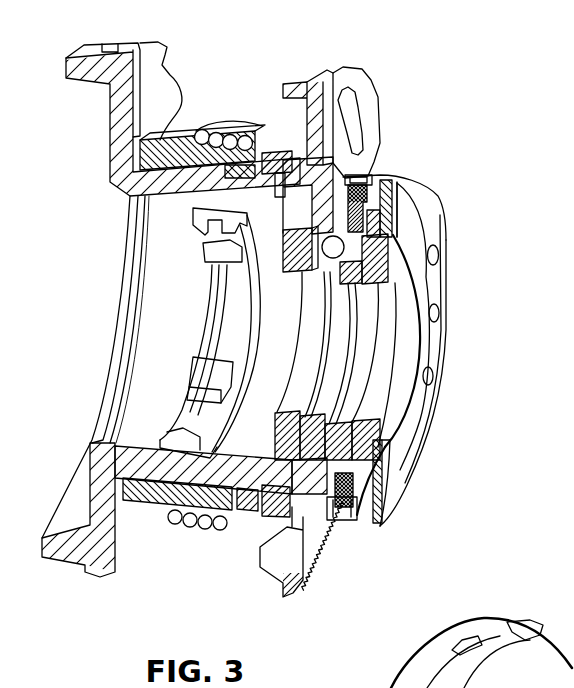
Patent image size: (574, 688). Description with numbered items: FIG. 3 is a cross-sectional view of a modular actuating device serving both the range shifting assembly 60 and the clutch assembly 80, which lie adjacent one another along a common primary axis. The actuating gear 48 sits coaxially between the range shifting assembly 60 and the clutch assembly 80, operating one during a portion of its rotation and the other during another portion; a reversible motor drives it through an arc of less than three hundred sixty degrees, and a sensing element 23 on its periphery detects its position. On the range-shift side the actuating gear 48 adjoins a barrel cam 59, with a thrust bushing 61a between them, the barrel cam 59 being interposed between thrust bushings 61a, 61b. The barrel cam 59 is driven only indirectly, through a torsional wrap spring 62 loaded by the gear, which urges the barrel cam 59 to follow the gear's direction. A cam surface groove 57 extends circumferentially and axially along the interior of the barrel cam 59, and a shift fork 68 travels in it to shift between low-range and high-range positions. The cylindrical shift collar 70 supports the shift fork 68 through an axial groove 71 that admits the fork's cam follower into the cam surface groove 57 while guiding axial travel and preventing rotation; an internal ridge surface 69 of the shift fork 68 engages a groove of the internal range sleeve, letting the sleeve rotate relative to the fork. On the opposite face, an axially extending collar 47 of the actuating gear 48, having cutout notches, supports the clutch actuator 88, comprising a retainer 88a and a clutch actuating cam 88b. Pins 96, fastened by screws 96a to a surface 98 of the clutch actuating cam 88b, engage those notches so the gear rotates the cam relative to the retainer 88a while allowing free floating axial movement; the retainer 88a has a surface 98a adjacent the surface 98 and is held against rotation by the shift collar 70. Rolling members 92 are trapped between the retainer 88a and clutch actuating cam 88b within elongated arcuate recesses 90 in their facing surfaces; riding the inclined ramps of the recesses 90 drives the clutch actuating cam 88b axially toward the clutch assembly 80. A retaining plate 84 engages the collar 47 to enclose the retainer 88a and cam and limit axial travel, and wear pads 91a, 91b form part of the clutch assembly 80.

The sensing element 23 is at (347, 92).
The axially extending collar 47 is at (374, 176).
The actuating gear 48 is at (323, 557).
The cam surface groove 57 is at (248, 140).
The barrel cam 59 is at (196, 130).
The range shifting assembly 60 is at (157, 315).
The thrust bushing 61a is at (272, 153).
The thrust bushing 61b is at (148, 137).
The torsional wrap spring 62 is at (188, 518).
The shift fork 68 is at (220, 312).
The internal ridge surface 69 is at (203, 382).
The shift collar 70 is at (102, 533).
The axial groove 71 is at (175, 212).
The clutch assembly 80 is at (441, 183).
The retaining plate 84 is at (423, 398).
The clutch actuator 88 is at (347, 322).
The retainer 88a is at (330, 392).
The clutch actuating cam 88b is at (344, 247).
The elongated arcuate recesses 90 is at (405, 294).
The wear pad 91a is at (337, 520).
The wear pad 91b is at (375, 422).
The rolling members 92 is at (385, 473).
The pins 96 is at (413, 184).
The screws 96a is at (416, 212).
The surface 98 is at (398, 230).
The surface 98a is at (323, 220).